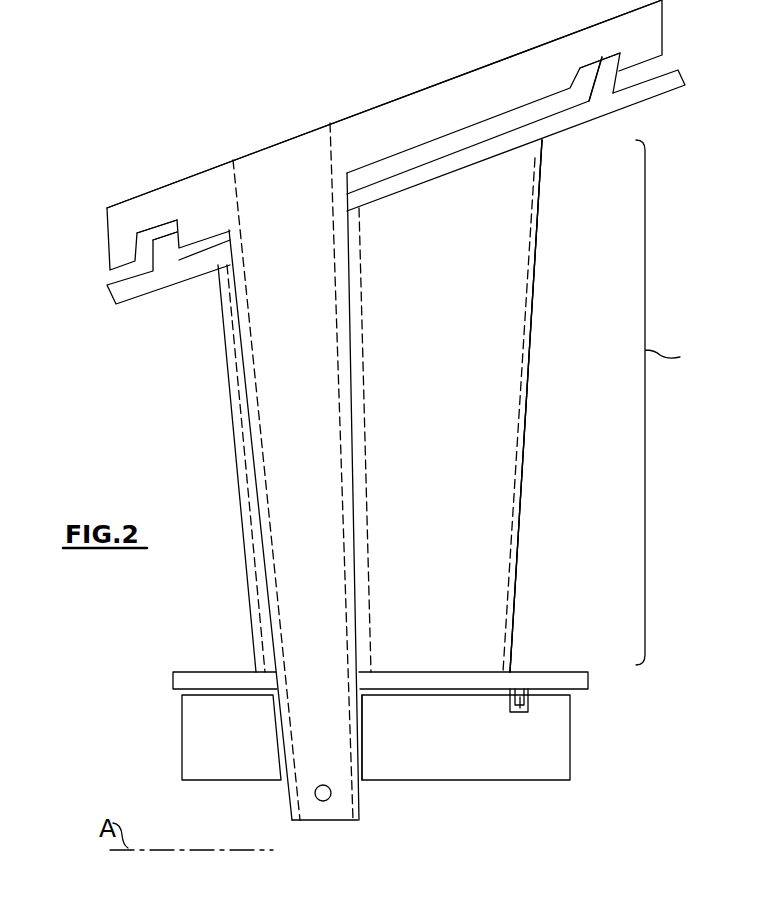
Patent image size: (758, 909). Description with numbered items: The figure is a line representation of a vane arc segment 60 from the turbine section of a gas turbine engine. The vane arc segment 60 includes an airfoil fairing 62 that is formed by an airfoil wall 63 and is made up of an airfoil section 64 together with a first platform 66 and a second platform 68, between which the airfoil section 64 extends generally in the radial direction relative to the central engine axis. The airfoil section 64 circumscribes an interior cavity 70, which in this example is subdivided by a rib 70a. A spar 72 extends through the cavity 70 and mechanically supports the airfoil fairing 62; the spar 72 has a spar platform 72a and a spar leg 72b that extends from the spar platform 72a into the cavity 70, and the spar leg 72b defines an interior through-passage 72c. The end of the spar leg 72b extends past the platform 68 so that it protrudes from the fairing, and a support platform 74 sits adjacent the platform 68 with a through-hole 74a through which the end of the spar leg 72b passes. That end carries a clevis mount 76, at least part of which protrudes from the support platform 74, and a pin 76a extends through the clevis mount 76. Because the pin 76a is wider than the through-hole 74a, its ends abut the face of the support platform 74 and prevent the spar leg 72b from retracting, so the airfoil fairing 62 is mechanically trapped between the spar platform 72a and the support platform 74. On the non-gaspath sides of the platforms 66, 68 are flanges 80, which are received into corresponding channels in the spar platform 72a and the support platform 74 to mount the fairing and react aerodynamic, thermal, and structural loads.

The vane arc segment 60 is at (96, 672).
The airfoil fairing 62 is at (522, 625).
The airfoil wall 63 is at (532, 312).
The airfoil section 64 is at (677, 402).
The first platform 66 is at (660, 87).
The second platform 68 is at (576, 679).
The interior cavity 70 is at (526, 278).
The rib 70a is at (365, 443).
The spar 72 is at (252, 138).
The spar platform 72a is at (477, 87).
The spar leg 72b is at (310, 348).
The interior through-passage 72c is at (346, 575).
The support platform 74 is at (548, 753).
The through-hole 74a is at (355, 732).
The clevis mount 76 is at (376, 798).
The pin 76a is at (327, 803).
The flange 80 is at (167, 247).